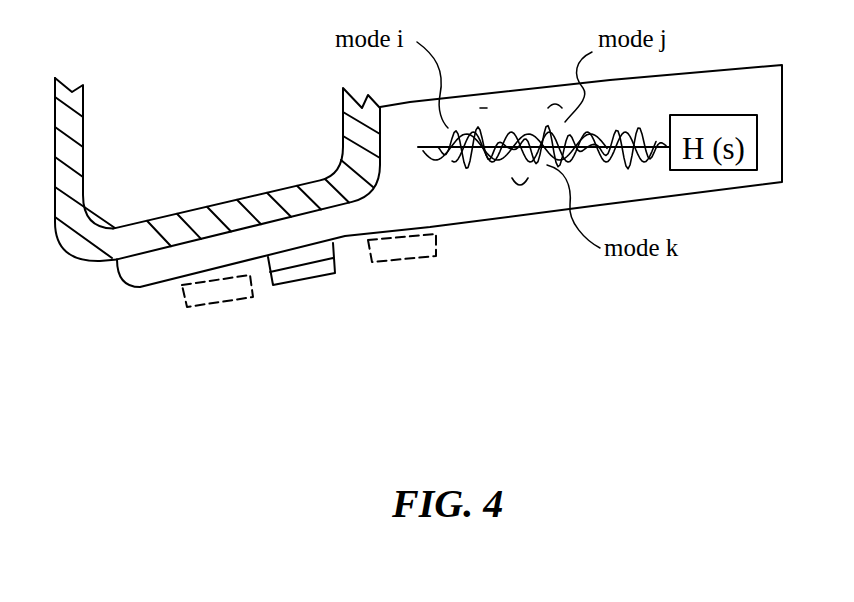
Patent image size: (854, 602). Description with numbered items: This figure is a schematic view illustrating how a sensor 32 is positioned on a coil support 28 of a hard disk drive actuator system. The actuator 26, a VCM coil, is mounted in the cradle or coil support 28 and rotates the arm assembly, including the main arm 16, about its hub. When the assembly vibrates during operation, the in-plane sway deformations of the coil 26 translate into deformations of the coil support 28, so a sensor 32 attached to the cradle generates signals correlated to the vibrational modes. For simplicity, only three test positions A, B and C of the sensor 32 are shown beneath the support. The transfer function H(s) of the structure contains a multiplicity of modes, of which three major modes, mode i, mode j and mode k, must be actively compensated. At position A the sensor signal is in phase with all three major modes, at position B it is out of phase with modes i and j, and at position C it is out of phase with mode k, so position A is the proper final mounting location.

The main arm 16 is at (477, 118).
The actuator 26 is at (85, 126).
The coil support 28 is at (132, 276).
The sensor 32 is at (298, 272).
The test position A is at (349, 303).
The test position B is at (205, 324).
The test position C is at (476, 260).